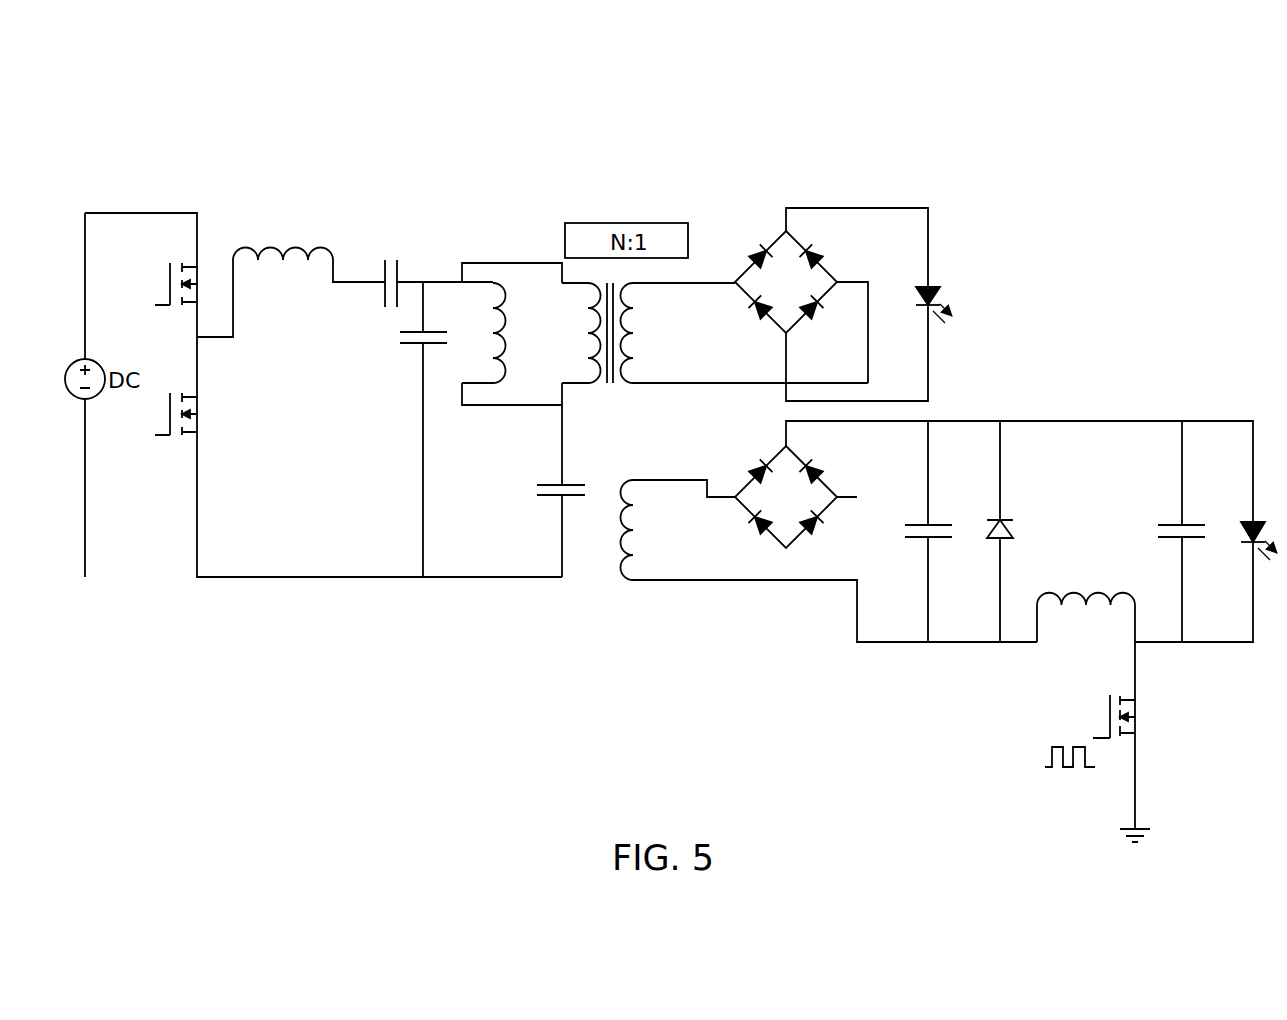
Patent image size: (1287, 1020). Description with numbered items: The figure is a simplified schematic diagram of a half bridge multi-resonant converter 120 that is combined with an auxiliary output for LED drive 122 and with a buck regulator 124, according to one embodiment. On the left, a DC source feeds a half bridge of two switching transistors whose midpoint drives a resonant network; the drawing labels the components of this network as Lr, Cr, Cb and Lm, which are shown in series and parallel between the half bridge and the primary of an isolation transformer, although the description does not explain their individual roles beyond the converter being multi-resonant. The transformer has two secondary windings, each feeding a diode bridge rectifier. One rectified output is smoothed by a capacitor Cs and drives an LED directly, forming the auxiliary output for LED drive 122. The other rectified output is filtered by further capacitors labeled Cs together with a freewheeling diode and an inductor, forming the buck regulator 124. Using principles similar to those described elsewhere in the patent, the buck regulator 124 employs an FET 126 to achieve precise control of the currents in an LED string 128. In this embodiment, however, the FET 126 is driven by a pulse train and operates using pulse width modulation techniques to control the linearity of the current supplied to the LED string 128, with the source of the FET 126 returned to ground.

The half bridge multi-resonant converter 120 is at (786, 127).
The auxiliary output for LED drive 122 is at (978, 394).
The buck regulator 124 is at (1032, 710).
The FET 126 is at (1108, 712).
The LED string 128 is at (1250, 522).
The resonant inductor Lr is at (268, 247).
The resonant capacitor Cr is at (385, 272).
The blocking capacitor Cb is at (408, 345).
The magnetizing inductance Lm is at (503, 318).
The smoothing capacitor Cs is at (548, 485).